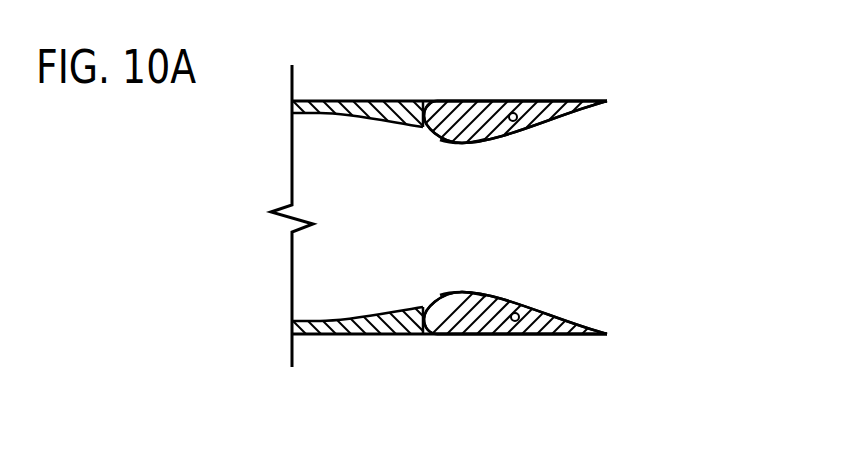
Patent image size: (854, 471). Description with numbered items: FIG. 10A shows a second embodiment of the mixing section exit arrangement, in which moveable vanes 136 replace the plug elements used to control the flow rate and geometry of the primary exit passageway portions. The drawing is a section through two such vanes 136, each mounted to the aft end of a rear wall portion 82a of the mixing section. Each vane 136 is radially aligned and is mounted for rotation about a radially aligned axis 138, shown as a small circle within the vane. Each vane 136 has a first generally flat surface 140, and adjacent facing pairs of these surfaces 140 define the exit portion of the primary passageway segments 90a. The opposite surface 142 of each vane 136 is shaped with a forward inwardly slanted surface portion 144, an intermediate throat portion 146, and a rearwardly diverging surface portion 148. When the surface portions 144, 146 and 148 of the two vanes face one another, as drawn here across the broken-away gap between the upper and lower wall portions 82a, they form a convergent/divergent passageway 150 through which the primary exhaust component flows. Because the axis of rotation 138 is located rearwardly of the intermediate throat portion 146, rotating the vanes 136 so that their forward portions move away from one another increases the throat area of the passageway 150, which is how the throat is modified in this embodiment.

The rear wall portion 82a is at (357, 100).
The primary passageway segment 90a is at (508, 73).
The vane 136 is at (455, 101).
The axis of rotation 138 is at (520, 101).
The first generally flat surface 140 is at (471, 101).
The opposite surface 142 is at (505, 137).
The forward inwardly slanted surface portion 144 is at (425, 127).
The intermediate throat portion 146 is at (463, 144).
The rearwardly diverging surface portion 148 is at (548, 128).
The convergent/divergent passageway 150 is at (523, 225).